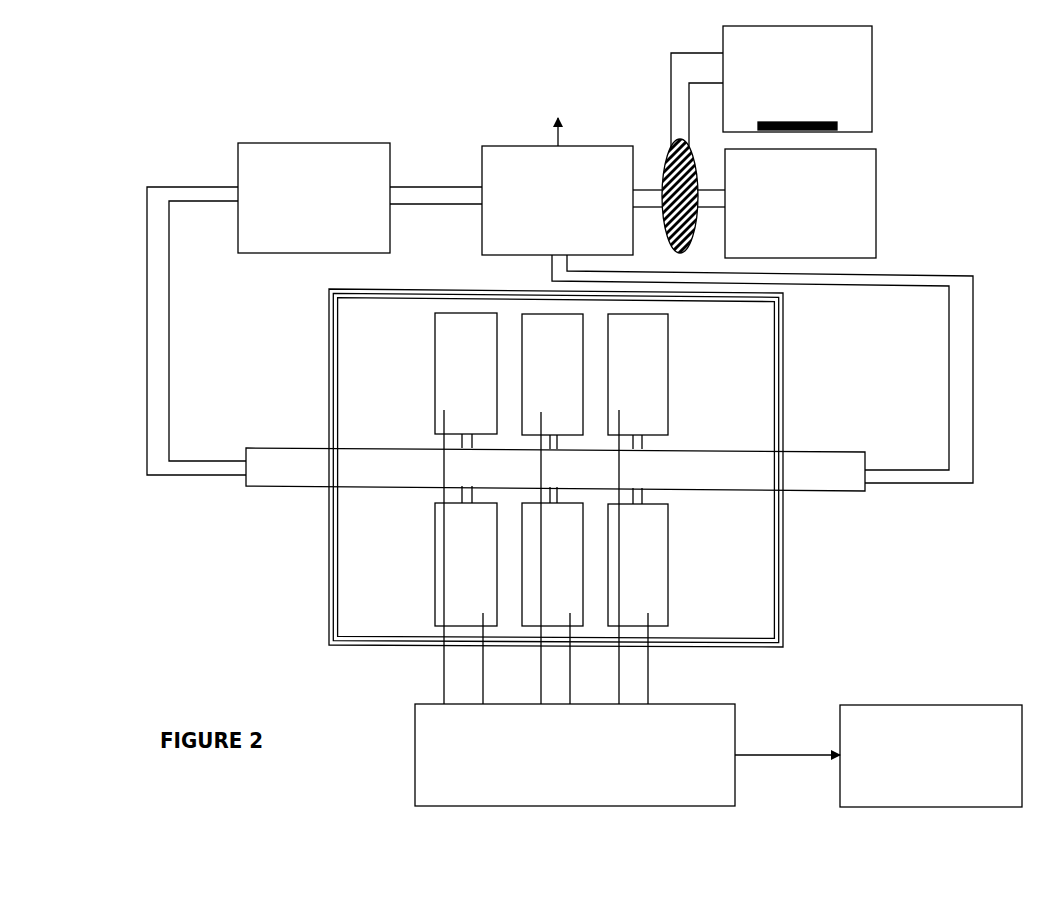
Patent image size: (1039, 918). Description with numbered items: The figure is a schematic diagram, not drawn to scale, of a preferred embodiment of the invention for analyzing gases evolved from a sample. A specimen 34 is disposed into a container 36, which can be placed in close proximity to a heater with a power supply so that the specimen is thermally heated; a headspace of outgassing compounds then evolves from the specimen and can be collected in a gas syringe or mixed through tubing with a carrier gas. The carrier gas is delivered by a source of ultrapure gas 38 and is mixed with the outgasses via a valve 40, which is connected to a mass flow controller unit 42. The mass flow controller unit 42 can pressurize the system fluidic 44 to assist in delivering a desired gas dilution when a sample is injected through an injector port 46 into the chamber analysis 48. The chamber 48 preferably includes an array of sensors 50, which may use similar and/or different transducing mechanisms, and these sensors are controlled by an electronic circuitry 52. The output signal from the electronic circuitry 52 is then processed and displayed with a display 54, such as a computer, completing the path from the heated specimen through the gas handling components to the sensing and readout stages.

The specimen 34 is at (837, 122).
The container 36 is at (872, 28).
The source of ultrapure gas 38 is at (874, 149).
The valve 40 is at (663, 157).
The mass flow controller unit 42 is at (478, 145).
The system fluidic 44 is at (148, 182).
The injector port 46 is at (235, 143).
The chamber analysis 48 is at (330, 643).
The array of sensors 50 is at (672, 625).
The electronic circuitry 52 is at (415, 806).
The display 54 is at (840, 807).